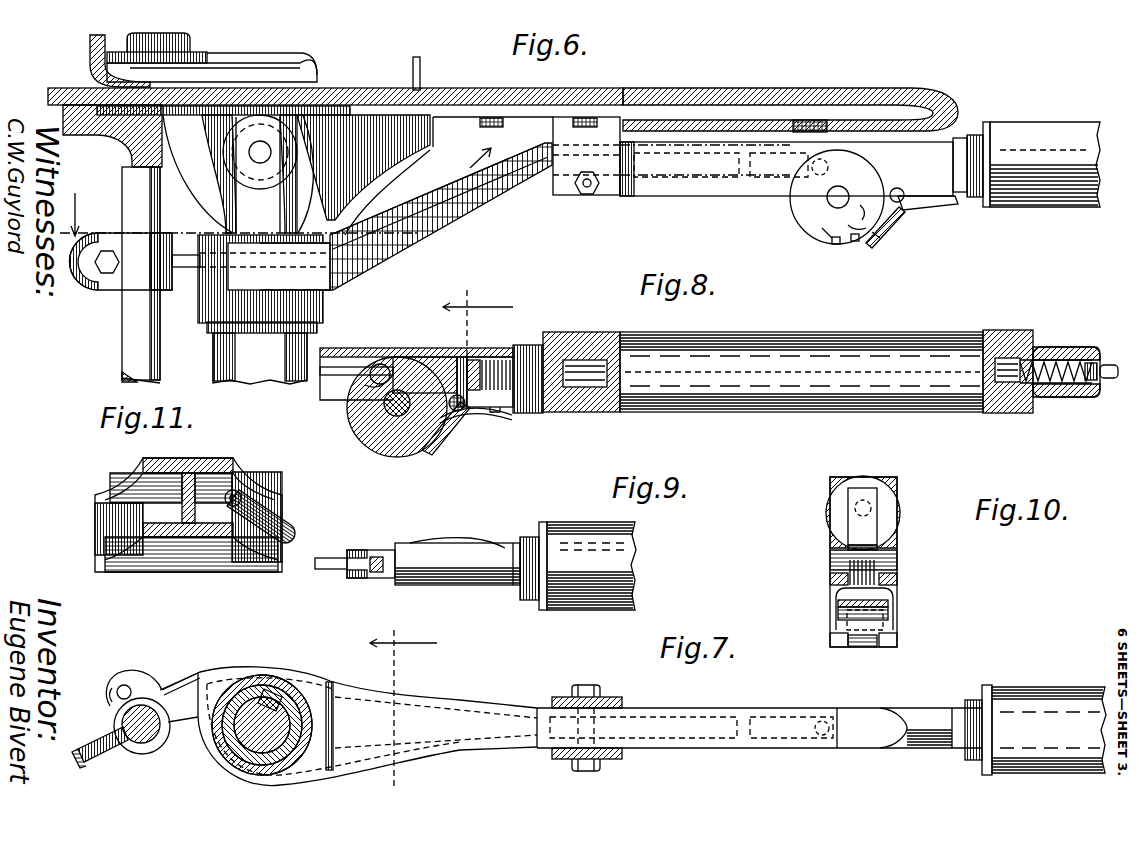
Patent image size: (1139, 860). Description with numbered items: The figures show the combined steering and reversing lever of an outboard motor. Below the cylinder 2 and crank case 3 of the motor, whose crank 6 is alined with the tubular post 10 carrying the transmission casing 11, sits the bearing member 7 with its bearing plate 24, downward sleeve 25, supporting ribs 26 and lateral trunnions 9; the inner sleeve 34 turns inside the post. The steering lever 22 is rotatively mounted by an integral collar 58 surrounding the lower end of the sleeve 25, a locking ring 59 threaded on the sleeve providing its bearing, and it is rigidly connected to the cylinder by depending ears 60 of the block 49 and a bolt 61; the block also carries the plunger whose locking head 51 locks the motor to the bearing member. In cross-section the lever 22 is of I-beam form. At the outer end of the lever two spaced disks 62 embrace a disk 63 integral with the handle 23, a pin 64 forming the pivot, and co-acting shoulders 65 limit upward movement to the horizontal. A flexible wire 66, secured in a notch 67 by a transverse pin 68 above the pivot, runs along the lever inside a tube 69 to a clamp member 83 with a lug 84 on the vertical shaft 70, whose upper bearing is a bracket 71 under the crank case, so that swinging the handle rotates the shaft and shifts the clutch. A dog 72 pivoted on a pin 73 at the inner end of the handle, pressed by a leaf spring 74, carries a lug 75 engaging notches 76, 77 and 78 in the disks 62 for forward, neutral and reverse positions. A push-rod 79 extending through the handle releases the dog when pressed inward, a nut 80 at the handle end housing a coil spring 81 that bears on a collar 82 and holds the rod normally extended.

In FIG. 6, the cylinder 2 is at (952, 102).
In FIG. 6, the crank case 3 is at (391, 87).
In FIG. 6, the crank 6 is at (192, 46).
In FIG. 6, the bearing member 7 is at (258, 175).
In FIG. 6, the trunnions 9 is at (260, 152).
In FIG. 6, the tubular casing or post 10 is at (260, 358).
In FIG. 8, the tubular casing or post 10 is at (478, 311).
In FIG. 7, the tubular casing or post 10 is at (262, 687).
In FIG. 7, the transmission casing 11 is at (403, 696).
In FIG. 6, the steering lever 22 is at (513, 208).
In FIG. 11, the steering lever 22 is at (203, 560).
In FIG. 7, the steering lever 22 is at (444, 758).
In FIG. 6, the handle 23 is at (1058, 190).
In FIG. 8, the handle 23 is at (760, 340).
In FIG. 9, the handle 23 is at (568, 535).
In FIG. 10, the handle 23 is at (886, 470).
In FIG. 7, the handle 23 is at (1035, 730).
In FIG. 6, the bearing plate 24 is at (320, 112).
In FIG. 7, the sleeve 25 is at (246, 686).
In FIG. 6, the ribs or flanges 26 is at (230, 185).
In FIG. 7, the inner sleeve 34 is at (276, 694).
In FIG. 6, the block 49 is at (461, 163).
In FIG. 6, the locking head 51 is at (365, 135).
In FIG. 6, the collar 58 is at (205, 278).
In FIG. 7, the collar 58 is at (307, 684).
In FIG. 6, the locking ring 59 is at (207, 312).
In FIG. 6, the depending ears 60 is at (610, 192).
In FIG. 7, the depending ears 60 is at (623, 700).
In FIG. 6, the bolt or pin 61 is at (580, 192).
In FIG. 7, the bolt or pin 61 is at (586, 770).
In FIG. 6, the disks 62 is at (822, 240).
In FIG. 10, the disks 62 is at (838, 650).
In FIG. 8, the disk 63 is at (405, 440).
In FIG. 10, the disk 63 is at (898, 544).
In FIG. 6, the pin 64 is at (850, 182).
In FIG. 8, the pin 64 is at (385, 400).
In FIG. 6, the co-acting shoulders or surfaces 65 is at (838, 147).
In FIG. 8, the co-acting shoulders or surfaces 65 is at (392, 348).
In FIG. 7, the co-acting shoulders or surfaces 65 is at (838, 730).
In FIG. 6, the flexible rod or wire 66 is at (185, 253).
In FIG. 8, the flexible rod or wire 66 is at (334, 368).
In FIG. 9, the flexible rod or wire 66 is at (330, 569).
In FIG. 7, the flexible rod or wire 66 is at (169, 688).
In FIG. 8, the notch 67 is at (360, 386).
In FIG. 9, the notch 67 is at (348, 558).
In FIG. 6, the transverse pin 68 is at (818, 175).
In FIG. 8, the transverse pin 68 is at (378, 364).
In FIG. 9, the transverse pin 68 is at (376, 556).
In FIG. 7, the transverse pin 68 is at (825, 738).
In FIG. 6, the tube 69 is at (673, 175).
In FIG. 11, the tube 69 is at (243, 496).
In FIG. 7, the tube 69 is at (340, 680).
In FIG. 6, the vertical shaft 70 is at (135, 318).
In FIG. 7, the vertical shaft 70 is at (142, 740).
In FIG. 6, the bracket 71 is at (112, 141).
In FIG. 6, the dog or latch 72 is at (888, 224).
In FIG. 8, the dog or latch 72 is at (452, 432).
In FIG. 10, the dog or latch 72 is at (845, 596).
In FIG. 6, the transverse pin 73 is at (904, 194).
In FIG. 8, the transverse pin 73 is at (468, 404).
In FIG. 10, the transverse pin 73 is at (838, 557).
In FIG. 6, the leaf spring 74 is at (905, 210).
In FIG. 8, the leaf spring 74 is at (440, 442).
In FIG. 10, the leaf spring 74 is at (883, 616).
In FIG. 6, the lug 75 is at (877, 232).
In FIG. 6, the notch 76 is at (873, 199).
In FIG. 6, the notch 77 is at (860, 215).
In FIG. 6, the notch 78 is at (823, 223).
In FIG. 8, the push-rod 79 is at (577, 368).
In FIG. 10, the push-rod 79 is at (896, 492).
In FIG. 8, the nut 80 is at (1065, 398).
In FIG. 8, the coil spring 81 is at (1058, 360).
In FIG. 8, the collar 82 is at (1085, 362).
In FIG. 6, the clamp member 83 is at (137, 250).
In FIG. 7, the clamp member 83 is at (160, 742).
In FIG. 7, the lug 84 is at (125, 684).